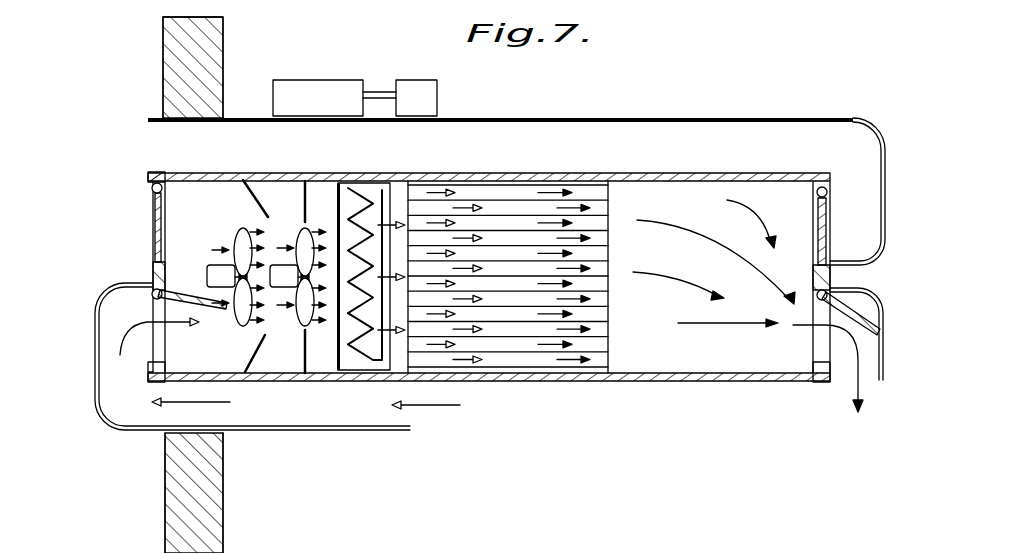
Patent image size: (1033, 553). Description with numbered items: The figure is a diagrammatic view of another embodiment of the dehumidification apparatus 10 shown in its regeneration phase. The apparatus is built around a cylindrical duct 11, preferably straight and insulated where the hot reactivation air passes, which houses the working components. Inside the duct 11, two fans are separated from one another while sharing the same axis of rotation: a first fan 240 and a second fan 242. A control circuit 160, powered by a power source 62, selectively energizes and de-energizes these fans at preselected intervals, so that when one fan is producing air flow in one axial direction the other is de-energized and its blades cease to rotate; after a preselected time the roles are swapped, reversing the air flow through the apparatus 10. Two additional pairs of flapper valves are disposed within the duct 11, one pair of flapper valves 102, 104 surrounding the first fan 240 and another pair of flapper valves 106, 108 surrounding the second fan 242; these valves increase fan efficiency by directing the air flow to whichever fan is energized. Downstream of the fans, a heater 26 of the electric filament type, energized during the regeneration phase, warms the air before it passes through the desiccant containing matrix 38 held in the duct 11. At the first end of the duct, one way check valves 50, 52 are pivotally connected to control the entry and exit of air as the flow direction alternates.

The dehumidification apparatus 10 is at (637, 100).
The control circuit 160 is at (303, 84).
The power source 62 is at (427, 87).
The one way check valve 50 is at (152, 212).
The one way check valve 52 is at (187, 293).
The flapper valve 102 is at (250, 200).
The flapper valve 104 is at (258, 352).
The flapper valve 106 is at (305, 197).
The flapper valve 108 is at (307, 352).
The first fan 240 is at (237, 240).
The second fan 242 is at (297, 240).
The heater 26 is at (358, 192).
The desiccant containing matrix 38 is at (513, 225).
The cylindrical duct 11 is at (666, 258).